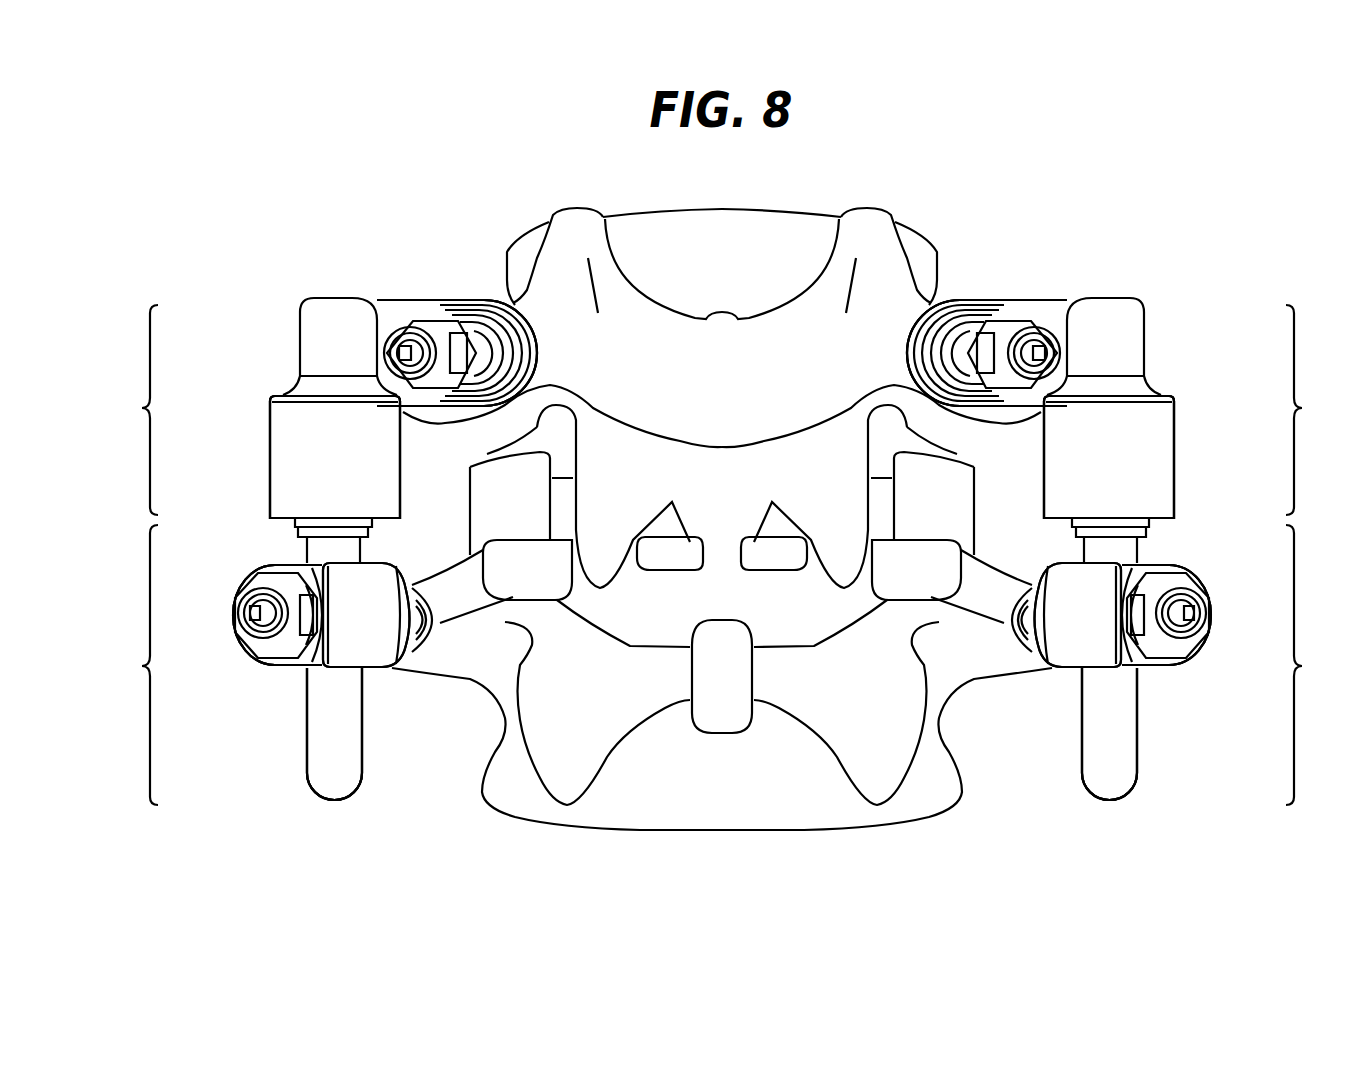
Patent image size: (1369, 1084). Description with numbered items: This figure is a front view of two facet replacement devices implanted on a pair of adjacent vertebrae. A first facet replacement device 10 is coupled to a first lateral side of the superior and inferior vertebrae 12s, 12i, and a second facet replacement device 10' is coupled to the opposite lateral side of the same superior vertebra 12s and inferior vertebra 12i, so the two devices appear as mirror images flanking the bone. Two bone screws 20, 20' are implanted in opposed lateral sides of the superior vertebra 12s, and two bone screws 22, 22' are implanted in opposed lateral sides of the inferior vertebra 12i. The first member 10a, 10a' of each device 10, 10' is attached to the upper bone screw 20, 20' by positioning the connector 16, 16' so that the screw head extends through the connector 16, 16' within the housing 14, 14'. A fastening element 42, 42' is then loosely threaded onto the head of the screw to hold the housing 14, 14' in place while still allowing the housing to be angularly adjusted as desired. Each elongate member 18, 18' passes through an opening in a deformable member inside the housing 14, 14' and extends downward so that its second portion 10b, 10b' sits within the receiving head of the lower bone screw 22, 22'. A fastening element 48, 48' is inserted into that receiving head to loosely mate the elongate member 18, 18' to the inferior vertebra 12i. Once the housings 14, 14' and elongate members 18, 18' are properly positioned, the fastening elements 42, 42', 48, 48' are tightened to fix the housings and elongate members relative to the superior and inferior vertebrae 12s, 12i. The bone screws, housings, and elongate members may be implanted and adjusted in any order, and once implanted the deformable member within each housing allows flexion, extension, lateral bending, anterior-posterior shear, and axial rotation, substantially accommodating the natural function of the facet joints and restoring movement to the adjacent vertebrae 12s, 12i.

The first facet replacement device 10 is at (1111, 495).
The second facet replacement device 10' is at (332, 493).
The first member 10a is at (1132, 409).
The first member 10a' is at (307, 409).
The second portion 10b is at (1196, 665).
The second portion 10b' is at (243, 665).
The superior vertebra 12s is at (697, 281).
The inferior vertebra 12i is at (701, 796).
The housing 14 is at (1109, 430).
The housing 14' is at (335, 430).
The connector 16 is at (1013, 291).
The connector 16' is at (429, 292).
The elongate member 18 is at (1109, 734).
The elongate member 18' is at (334, 734).
The bone screw 20 is at (987, 295).
The bone screw 20' is at (457, 292).
The bone screw 22 is at (1107, 679).
The bone screw 22' is at (338, 678).
The fastening element 42 is at (1072, 310).
The fastening element 42' is at (373, 308).
The fastening element 48 is at (1192, 648).
The fastening element 48' is at (247, 648).